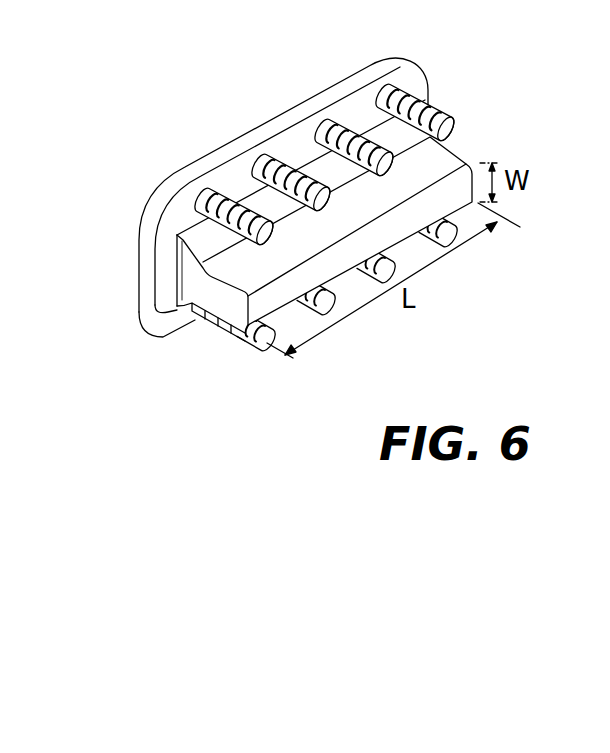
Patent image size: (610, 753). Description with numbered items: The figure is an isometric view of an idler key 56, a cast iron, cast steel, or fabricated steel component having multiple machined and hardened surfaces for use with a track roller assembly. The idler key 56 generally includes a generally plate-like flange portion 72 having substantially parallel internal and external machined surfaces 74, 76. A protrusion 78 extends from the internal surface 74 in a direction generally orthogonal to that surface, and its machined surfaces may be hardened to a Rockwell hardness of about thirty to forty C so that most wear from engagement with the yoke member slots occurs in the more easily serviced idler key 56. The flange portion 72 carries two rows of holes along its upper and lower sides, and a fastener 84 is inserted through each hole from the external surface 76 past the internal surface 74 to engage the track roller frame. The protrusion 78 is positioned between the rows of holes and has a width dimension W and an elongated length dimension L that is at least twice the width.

The idler key 56 is at (478, 154).
The flange portion 72 is at (148, 245).
The internal surface 74 is at (168, 307).
The external surface 76 is at (150, 198).
The protrusion 78 is at (234, 312).
The fastener 84 is at (321, 231).